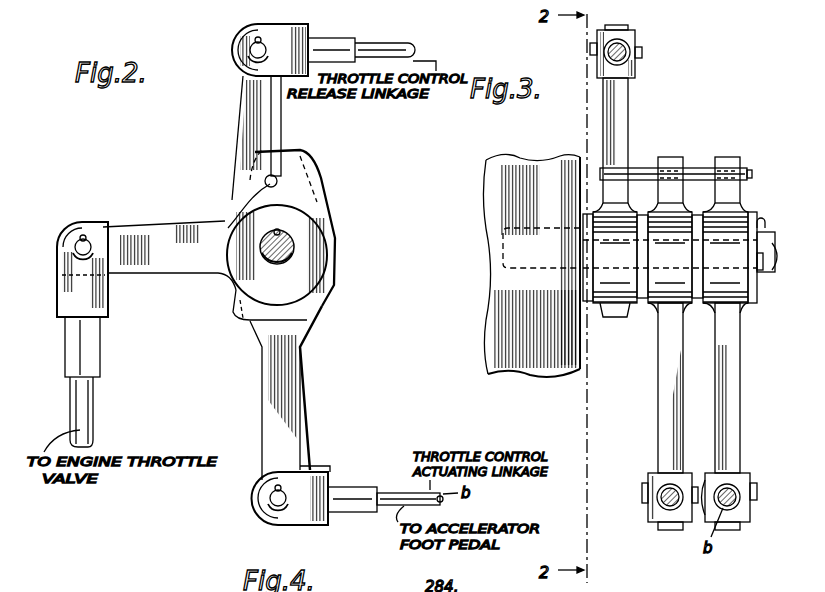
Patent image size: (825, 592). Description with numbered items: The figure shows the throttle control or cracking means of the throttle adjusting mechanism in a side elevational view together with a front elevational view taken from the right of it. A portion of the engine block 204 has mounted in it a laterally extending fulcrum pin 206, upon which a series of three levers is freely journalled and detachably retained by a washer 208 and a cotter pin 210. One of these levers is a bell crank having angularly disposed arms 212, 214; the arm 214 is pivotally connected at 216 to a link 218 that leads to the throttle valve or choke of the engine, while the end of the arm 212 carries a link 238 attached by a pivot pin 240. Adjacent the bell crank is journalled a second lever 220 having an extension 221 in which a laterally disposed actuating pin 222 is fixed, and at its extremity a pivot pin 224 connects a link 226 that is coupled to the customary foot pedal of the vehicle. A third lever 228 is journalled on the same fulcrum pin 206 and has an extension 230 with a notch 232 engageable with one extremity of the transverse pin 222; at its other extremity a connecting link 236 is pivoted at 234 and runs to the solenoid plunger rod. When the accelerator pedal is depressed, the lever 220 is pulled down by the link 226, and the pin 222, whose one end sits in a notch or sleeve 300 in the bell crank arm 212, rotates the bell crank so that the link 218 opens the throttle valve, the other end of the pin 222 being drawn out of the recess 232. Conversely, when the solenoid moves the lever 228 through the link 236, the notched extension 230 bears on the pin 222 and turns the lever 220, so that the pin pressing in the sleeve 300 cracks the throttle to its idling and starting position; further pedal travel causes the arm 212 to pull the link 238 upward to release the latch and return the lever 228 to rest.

In FIG. 3, the engine block 204 is at (503, 198).
In FIG. 3, the fulcrum pin 206 is at (775, 272).
In FIG. 3, the washer 208 is at (758, 216).
In FIG. 2, the cotter pin 210 is at (275, 230).
In FIG. 3, the cotter pin 210 is at (762, 232).
In FIG. 2, the bell crank arm 212 is at (282, 121).
In FIG. 3, the bell crank arm 212 is at (623, 110).
In FIG. 2, the bell crank arm 214 is at (168, 277).
In FIG. 2, the pivotal connection 216 is at (89, 242).
In FIG. 2, the link 218 is at (92, 407).
In FIG. 2, the second lever 220 is at (260, 387).
In FIG. 3, the second lever 220 is at (667, 362).
In FIG. 2, the extension 221 is at (322, 188).
In FIG. 3, the extension 221 is at (672, 158).
In FIG. 2, the actuating pin 222 is at (253, 138).
In FIG. 3, the actuating pin 222 is at (642, 172).
In FIG. 2, the pivot pin 224 is at (276, 506).
In FIG. 2, the link 226 is at (391, 506).
In FIG. 3, the link 226 is at (673, 507).
In FIG. 2, the third lever 228 is at (306, 457).
In FIG. 3, the third lever 228 is at (729, 367).
In FIG. 2, the extension 230 is at (306, 155).
In FIG. 3, the extension 230 is at (731, 160).
In FIG. 2, the notch 232 is at (278, 182).
In FIG. 3, the pivot 234 is at (758, 488).
In FIG. 2, the connecting link 236 is at (420, 492).
In FIG. 3, the connecting link 236 is at (737, 510).
In FIG. 2, the link 238 is at (406, 44).
In FIG. 3, the link 238 is at (637, 51).
In FIG. 2, the pivot pin 240 is at (250, 52).
In FIG. 2, the notch or sleeve 300 is at (262, 186).